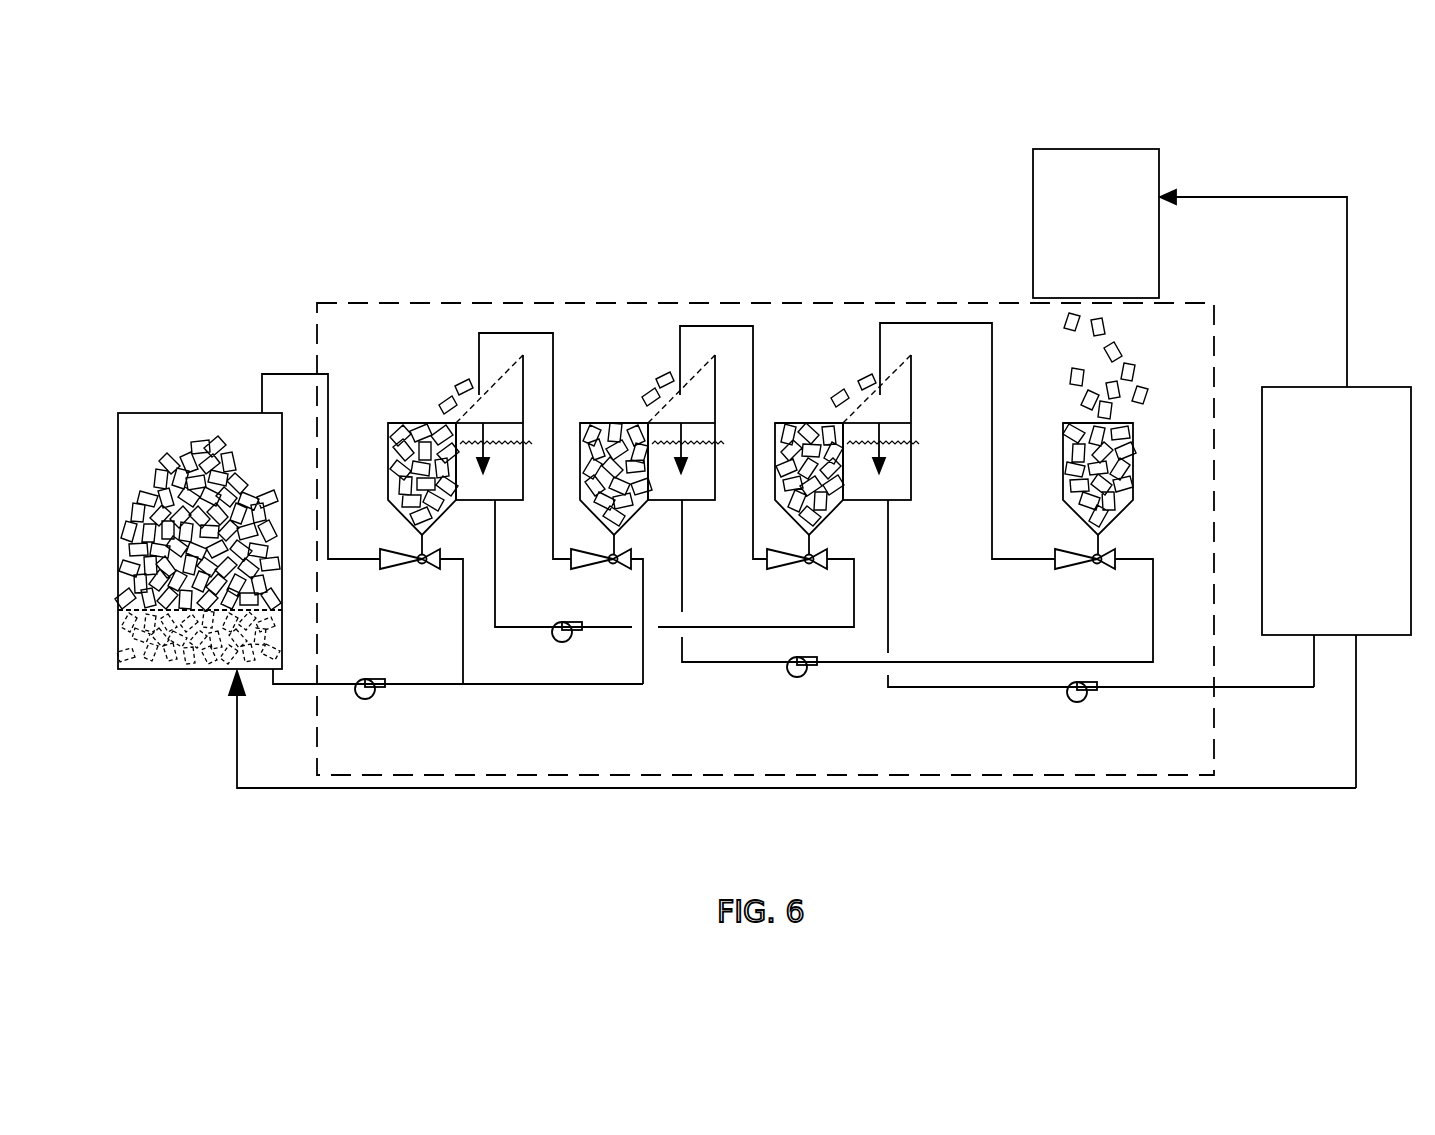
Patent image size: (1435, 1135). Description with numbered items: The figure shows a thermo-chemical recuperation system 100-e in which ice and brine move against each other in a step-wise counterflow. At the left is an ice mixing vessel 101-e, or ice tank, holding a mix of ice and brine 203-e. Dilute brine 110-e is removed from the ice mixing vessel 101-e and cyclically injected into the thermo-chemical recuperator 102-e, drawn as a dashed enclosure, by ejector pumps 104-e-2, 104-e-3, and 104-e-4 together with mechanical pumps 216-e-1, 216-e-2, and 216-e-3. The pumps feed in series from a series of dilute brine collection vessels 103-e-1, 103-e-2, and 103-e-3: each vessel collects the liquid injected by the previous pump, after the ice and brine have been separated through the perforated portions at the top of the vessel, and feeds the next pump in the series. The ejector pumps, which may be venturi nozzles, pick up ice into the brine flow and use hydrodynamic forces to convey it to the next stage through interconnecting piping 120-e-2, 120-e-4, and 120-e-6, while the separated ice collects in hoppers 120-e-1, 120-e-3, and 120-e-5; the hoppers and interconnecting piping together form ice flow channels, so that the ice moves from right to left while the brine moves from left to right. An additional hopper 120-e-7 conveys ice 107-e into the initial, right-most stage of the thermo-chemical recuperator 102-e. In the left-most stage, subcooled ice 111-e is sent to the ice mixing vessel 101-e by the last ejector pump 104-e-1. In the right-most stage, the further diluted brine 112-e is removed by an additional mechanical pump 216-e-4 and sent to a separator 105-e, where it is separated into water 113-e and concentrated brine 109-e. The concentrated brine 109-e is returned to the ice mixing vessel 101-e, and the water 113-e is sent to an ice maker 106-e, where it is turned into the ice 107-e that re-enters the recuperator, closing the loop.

The thermo-chemical recuperation system 100-e is at (1326, 114).
The ice mixing vessel 101-e is at (150, 412).
The thermo-chemical recuperator 102-e is at (968, 776).
The dilute brine collection vessel 103-e-1 is at (517, 500).
The dilute brine collection vessel 103-e-2 is at (700, 500).
The dilute brine collection vessel 103-e-3 is at (903, 500).
The ejector pump 104-e-1 is at (420, 566).
The ejector pump 104-e-2 is at (610, 566).
The ejector pump 104-e-3 is at (805, 566).
The ejector pump 104-e-4 is at (1093, 566).
The separator 105-e is at (1290, 387).
The ice maker 106-e is at (1033, 195).
The ice 107-e is at (1122, 370).
The concentrated brine 109-e is at (607, 789).
The dilute brine 110-e is at (577, 685).
The ice 111-e is at (300, 373).
The further diluted brine 112-e is at (1158, 688).
The water 113-e is at (1347, 239).
The hopper 120-e-1 is at (393, 423).
The interconnecting piping 120-e-2 is at (532, 333).
The hopper 120-e-3 is at (624, 418).
The interconnecting piping 120-e-4 is at (735, 326).
The hopper 120-e-5 is at (827, 417).
The interconnecting piping 120-e-6 is at (939, 323).
The hopper 120-e-7 is at (1070, 420).
The mix of ice and brine 203-e is at (153, 652).
The mechanical pump 216-e-1 is at (368, 700).
The mechanical pump 216-e-2 is at (553, 642).
The mechanical pump 216-e-3 is at (790, 672).
The mechanical pump 216-e-4 is at (1068, 697).